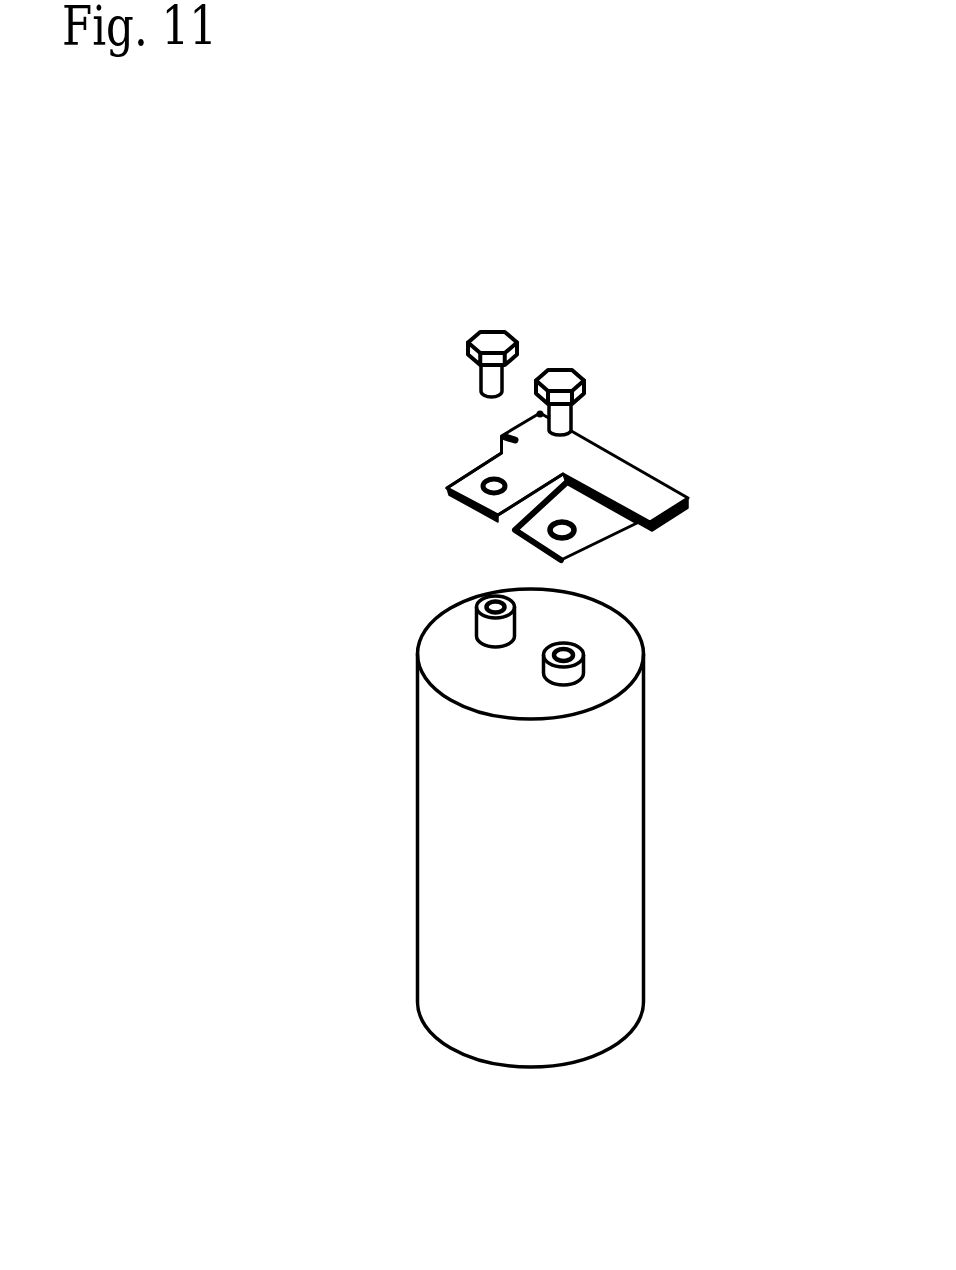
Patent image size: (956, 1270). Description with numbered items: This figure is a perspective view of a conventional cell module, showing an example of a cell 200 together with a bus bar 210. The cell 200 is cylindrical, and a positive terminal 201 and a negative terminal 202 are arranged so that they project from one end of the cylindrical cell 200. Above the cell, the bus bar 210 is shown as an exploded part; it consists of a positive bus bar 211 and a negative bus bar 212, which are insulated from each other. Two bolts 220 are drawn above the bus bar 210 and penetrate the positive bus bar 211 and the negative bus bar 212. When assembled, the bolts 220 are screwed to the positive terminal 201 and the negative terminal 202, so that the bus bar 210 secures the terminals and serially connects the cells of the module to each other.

The cell 200 is at (582, 883).
The positive terminal 201 is at (584, 668).
The negative terminal 202 is at (476, 609).
The bus bar 210 is at (657, 457).
The positive bus bar 211 is at (600, 545).
The negative bus bar 212 is at (470, 472).
The bolt 220 is at (492, 337).